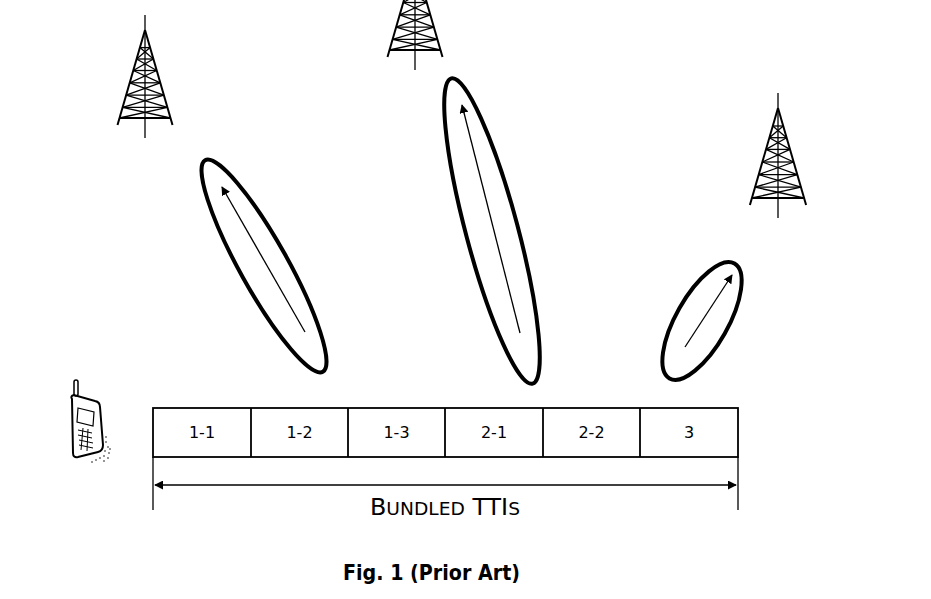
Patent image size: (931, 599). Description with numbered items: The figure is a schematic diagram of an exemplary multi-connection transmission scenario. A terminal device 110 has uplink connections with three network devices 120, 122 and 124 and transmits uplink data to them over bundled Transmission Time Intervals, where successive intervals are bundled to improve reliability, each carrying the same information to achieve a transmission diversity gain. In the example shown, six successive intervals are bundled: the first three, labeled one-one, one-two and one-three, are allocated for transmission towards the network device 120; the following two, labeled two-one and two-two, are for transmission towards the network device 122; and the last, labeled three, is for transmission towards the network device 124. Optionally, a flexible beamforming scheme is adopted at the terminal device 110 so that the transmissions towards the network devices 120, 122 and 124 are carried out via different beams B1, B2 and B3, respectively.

The terminal device 110 is at (89, 435).
The network device 120 is at (145, 94).
The network device 122 is at (415, 55).
The network device 124 is at (778, 175).
The beam B1 is at (264, 266).
The beam B2 is at (492, 231).
The beam B3 is at (693, 321).